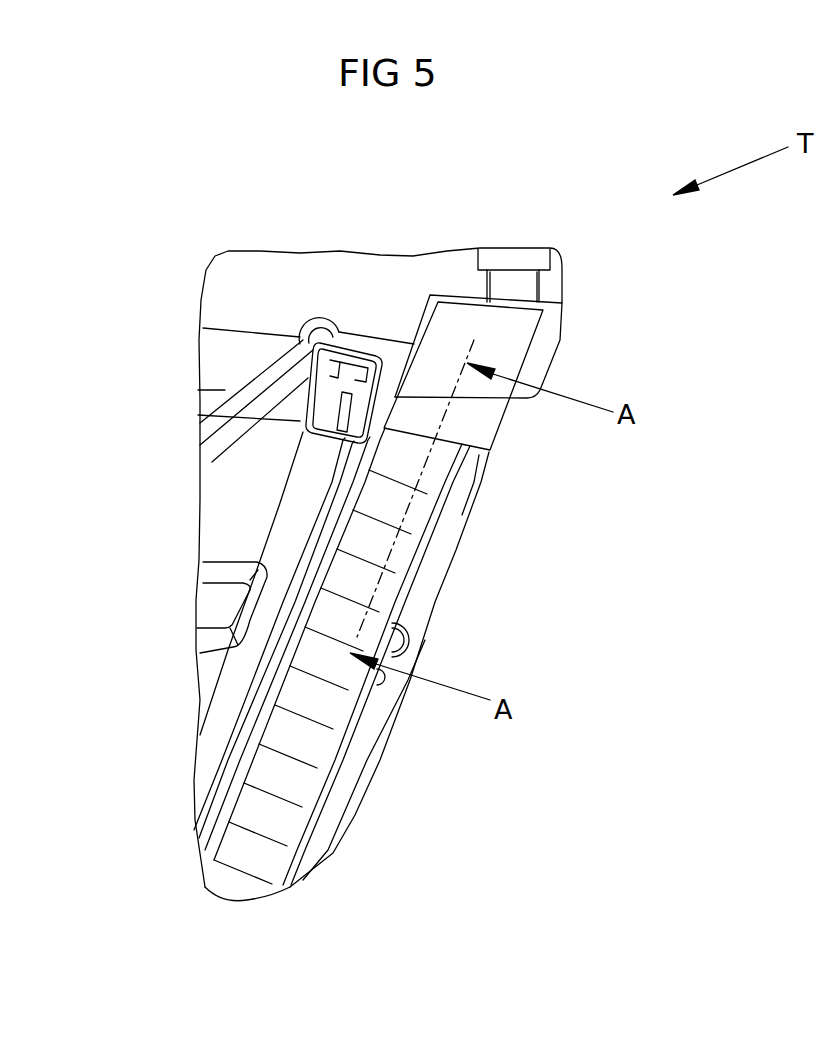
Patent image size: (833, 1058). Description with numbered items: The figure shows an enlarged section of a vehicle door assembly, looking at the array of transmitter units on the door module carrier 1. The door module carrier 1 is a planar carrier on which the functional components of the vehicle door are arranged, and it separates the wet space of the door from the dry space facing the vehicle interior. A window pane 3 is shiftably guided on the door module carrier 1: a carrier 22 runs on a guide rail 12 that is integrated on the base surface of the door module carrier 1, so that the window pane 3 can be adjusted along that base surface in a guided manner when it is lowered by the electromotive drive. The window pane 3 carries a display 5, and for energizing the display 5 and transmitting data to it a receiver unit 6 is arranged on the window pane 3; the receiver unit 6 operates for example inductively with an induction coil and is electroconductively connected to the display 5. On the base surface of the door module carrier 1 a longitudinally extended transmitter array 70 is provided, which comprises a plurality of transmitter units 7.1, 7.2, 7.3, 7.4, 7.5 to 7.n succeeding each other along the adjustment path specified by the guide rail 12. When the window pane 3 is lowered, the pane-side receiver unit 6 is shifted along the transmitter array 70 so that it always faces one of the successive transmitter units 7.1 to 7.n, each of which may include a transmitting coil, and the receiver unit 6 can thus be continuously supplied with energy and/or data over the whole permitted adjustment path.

The door module carrier 1 is at (202, 474).
The window pane 3 is at (298, 262).
The display 5 is at (523, 253).
The receiver unit 6 is at (478, 421).
The transmitter unit 7.1 is at (440, 437).
The transmitter unit 7.2 is at (423, 477).
The transmitter unit 7.3 is at (412, 515).
The transmitter unit 7.4 is at (398, 553).
The transmitter unit 7.5 is at (383, 600).
The transmitter unit 7.n is at (280, 880).
The guide rail 12 is at (257, 670).
The carrier 22 is at (337, 368).
The transmitter array 70 is at (366, 824).